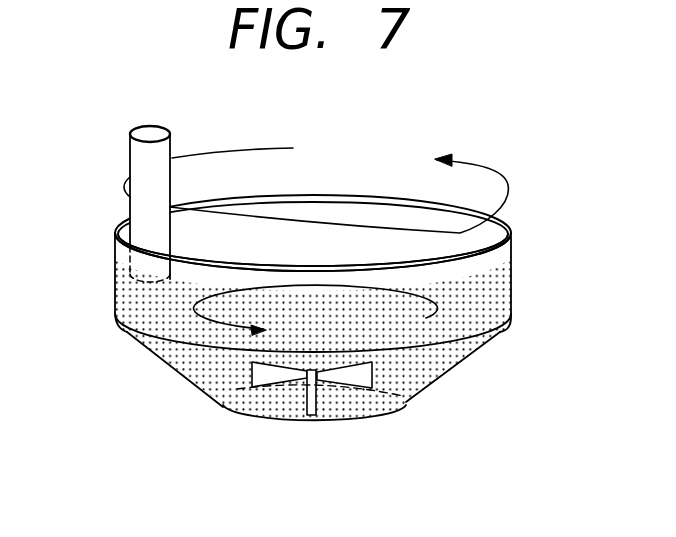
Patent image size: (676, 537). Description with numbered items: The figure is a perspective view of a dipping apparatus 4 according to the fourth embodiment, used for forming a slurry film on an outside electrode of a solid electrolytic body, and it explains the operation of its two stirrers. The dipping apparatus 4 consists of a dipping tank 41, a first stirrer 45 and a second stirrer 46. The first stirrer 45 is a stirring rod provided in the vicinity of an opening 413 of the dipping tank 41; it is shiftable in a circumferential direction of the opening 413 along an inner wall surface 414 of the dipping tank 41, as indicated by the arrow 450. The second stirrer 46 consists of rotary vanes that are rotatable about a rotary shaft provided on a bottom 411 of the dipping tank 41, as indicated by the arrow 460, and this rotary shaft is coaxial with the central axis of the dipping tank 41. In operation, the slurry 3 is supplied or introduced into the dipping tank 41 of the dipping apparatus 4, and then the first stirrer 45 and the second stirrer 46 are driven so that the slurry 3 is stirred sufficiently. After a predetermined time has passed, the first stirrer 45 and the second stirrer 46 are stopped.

The slurry 3 is at (408, 336).
The dipping apparatus 4 is at (133, 357).
The dipping tank 41 is at (180, 378).
The bottom 411 is at (340, 410).
The opening 413 is at (498, 216).
The inner wall surface 414 is at (115, 239).
The first stirrer 45 is at (150, 130).
The arrow 450 is at (483, 167).
The second stirrer 46 is at (267, 383).
The arrow 460 is at (440, 301).